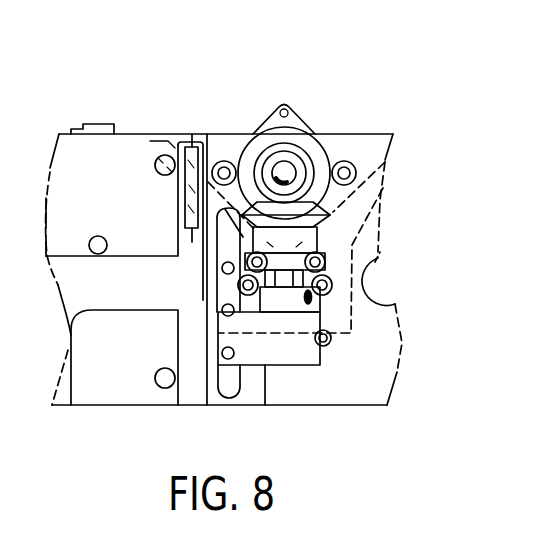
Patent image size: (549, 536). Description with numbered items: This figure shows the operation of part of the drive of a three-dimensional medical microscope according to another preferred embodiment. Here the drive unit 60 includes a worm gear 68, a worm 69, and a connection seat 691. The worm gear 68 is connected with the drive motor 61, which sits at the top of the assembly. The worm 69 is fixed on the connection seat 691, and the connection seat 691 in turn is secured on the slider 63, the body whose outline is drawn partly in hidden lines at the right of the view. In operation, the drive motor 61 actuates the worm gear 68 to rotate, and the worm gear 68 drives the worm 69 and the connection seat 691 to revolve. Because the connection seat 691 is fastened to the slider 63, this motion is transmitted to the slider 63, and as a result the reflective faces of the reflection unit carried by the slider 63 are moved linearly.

The drive unit 60 is at (296, 109).
The drive motor 61 is at (310, 121).
The worm gear 68 is at (320, 160).
The worm 69 is at (320, 223).
The slider 63 is at (335, 313).
The connection seat 691 is at (307, 358).